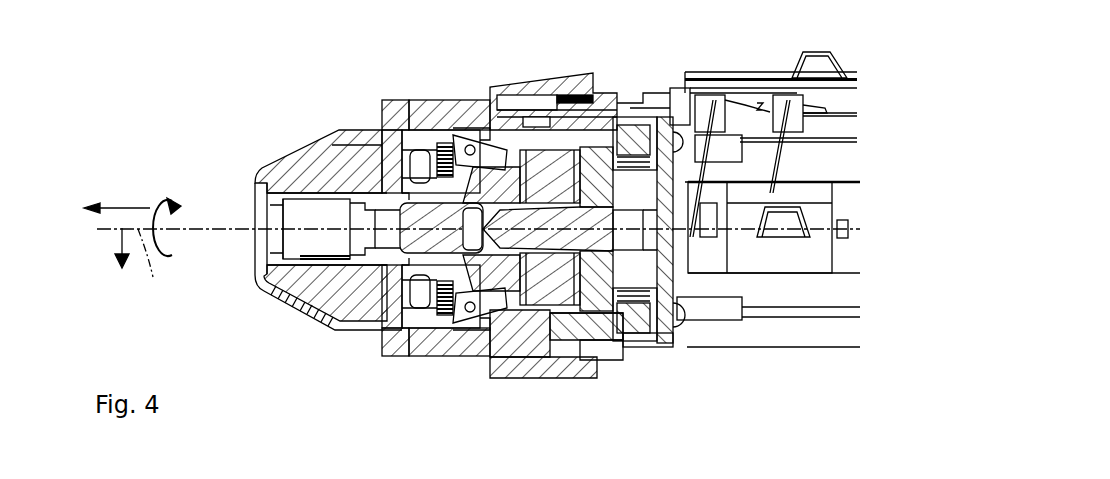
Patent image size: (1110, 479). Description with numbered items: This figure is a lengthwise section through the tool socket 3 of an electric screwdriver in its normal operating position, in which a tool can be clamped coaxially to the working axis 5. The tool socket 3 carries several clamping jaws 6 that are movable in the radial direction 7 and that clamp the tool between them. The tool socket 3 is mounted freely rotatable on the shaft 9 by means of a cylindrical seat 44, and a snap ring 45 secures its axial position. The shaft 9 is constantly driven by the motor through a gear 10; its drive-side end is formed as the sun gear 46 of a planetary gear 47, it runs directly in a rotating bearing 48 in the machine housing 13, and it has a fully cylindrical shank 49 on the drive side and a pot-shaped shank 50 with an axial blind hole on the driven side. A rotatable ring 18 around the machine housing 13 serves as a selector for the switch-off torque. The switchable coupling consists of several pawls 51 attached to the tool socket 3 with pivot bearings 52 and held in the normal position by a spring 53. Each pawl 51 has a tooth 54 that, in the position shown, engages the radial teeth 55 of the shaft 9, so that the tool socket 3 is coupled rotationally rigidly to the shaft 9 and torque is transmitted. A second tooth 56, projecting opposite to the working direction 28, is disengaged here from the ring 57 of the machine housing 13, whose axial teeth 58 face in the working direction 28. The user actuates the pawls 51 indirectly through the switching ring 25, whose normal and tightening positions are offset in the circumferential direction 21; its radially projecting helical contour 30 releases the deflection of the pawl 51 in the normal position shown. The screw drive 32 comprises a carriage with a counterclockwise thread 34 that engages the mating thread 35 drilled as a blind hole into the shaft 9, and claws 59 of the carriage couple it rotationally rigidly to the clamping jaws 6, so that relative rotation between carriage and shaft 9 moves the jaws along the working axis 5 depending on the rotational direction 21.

The tool socket 3 is at (310, 283).
The working axis 5 is at (148, 265).
The clamping jaws 6 is at (330, 163).
The radial direction 7 is at (117, 250).
The shaft 9 is at (627, 237).
The gear 10 is at (747, 172).
The machine housing 13 is at (575, 240).
The rotatable ring 18 is at (573, 83).
The rotational direction 21 is at (160, 203).
The switching ring 25 is at (412, 160).
The working direction 28 is at (113, 203).
The contour 30 is at (472, 130).
The screw drive 32 is at (377, 270).
The thread 34 is at (447, 283).
The mating thread 35 is at (427, 257).
The cylindrical seat 44 is at (419, 150).
The snap ring 45 is at (395, 125).
The sun gear 46 is at (678, 327).
The planetary gear 47 is at (620, 177).
The rotating bearing 48 is at (583, 163).
The fully cylindrical shank 49 is at (537, 165).
The pot-shaped shank 50 is at (440, 167).
The pawls 51 is at (500, 282).
The pivot bearings 52 is at (470, 307).
The spring 53 is at (447, 303).
The tooth 54 is at (548, 312).
The radial teeth 55 is at (553, 327).
The second tooth 56 is at (510, 283).
The ring 57 is at (516, 150).
The axial teeth 58 is at (503, 140).
The claws 59 is at (357, 253).